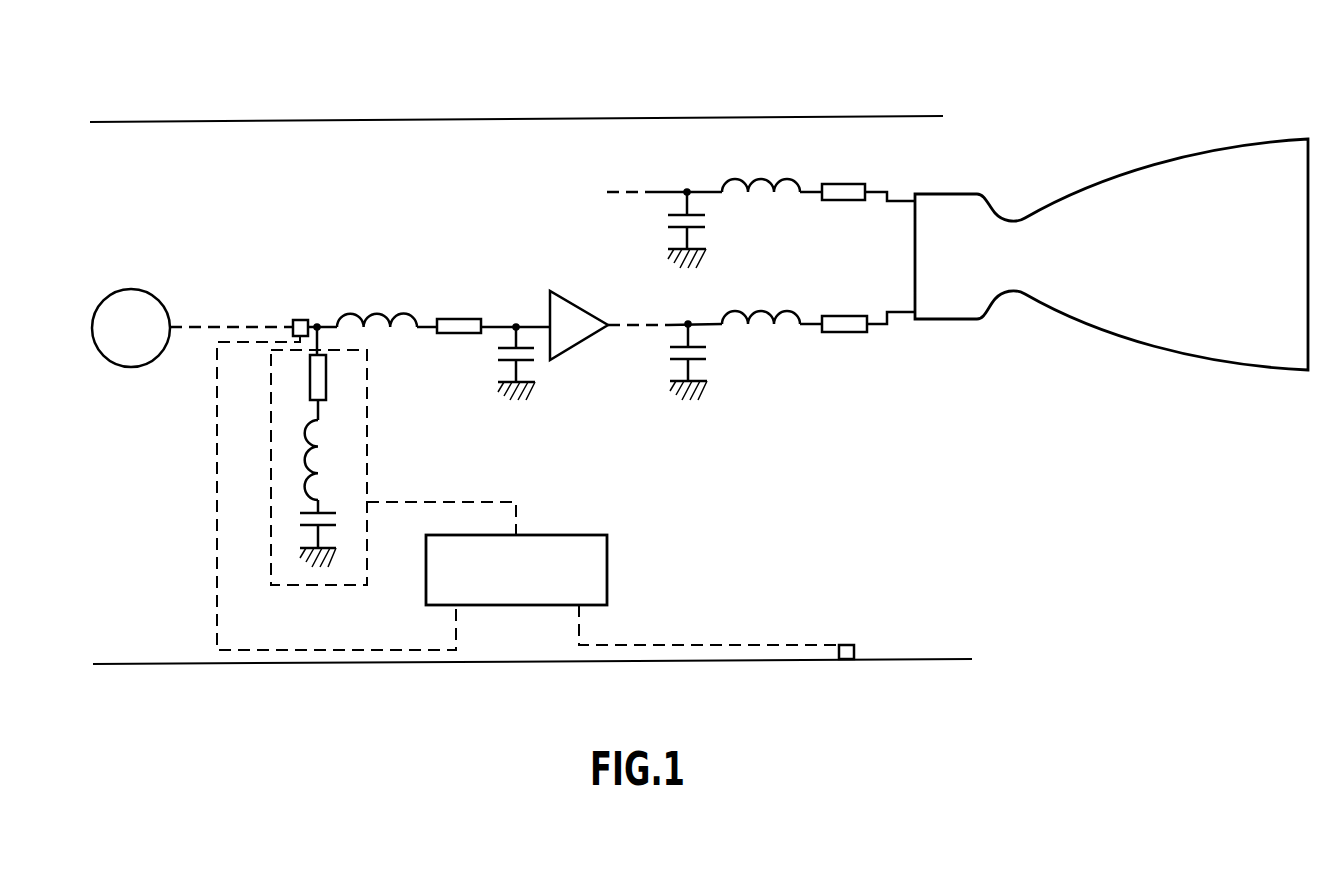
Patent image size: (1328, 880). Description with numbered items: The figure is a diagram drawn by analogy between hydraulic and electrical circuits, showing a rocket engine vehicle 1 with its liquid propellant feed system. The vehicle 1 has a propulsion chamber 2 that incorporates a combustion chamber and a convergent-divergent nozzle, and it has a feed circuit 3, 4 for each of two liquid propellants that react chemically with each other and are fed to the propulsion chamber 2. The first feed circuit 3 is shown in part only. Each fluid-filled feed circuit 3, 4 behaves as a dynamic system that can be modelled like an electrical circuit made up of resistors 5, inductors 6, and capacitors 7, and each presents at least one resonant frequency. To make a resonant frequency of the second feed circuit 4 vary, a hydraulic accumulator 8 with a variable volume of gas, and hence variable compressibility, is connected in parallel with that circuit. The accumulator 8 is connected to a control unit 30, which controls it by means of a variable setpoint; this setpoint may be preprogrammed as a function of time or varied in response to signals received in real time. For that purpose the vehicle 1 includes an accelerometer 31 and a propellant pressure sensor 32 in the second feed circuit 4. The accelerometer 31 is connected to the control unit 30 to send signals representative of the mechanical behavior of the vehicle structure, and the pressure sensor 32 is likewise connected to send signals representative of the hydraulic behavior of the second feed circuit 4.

The vehicle 1 is at (978, 90).
The propulsion chamber 2 is at (1157, 264).
The first feed circuit 3 is at (668, 192).
The second feed circuit 4 is at (668, 325).
The resistors 5 is at (847, 333).
The inductors 6 is at (752, 328).
The capacitors 7 is at (670, 359).
The hydraulic accumulator 8 is at (340, 433).
The control unit 30 is at (530, 583).
The accelerometer 31 is at (854, 645).
The propellant pressure sensor 32 is at (300, 320).